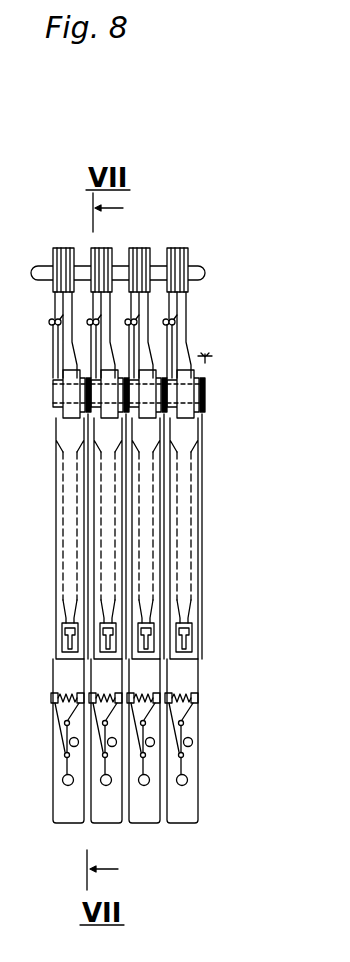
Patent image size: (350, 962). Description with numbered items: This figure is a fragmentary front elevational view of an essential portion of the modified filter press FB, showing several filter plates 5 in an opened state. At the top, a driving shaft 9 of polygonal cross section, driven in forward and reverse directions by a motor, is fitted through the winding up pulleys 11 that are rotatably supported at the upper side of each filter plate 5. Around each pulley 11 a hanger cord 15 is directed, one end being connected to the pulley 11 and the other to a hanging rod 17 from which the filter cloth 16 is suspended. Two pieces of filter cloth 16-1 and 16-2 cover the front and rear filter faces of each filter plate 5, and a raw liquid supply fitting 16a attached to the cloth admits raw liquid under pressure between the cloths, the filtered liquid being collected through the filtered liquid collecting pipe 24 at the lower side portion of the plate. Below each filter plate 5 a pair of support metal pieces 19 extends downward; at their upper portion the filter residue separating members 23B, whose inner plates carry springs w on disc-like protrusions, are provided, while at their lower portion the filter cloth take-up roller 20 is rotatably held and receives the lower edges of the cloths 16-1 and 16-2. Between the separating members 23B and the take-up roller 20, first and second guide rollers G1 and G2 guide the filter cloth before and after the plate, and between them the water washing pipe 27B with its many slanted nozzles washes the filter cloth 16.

The filter press FB is at (212, 159).
The driving shaft 9 is at (194, 262).
The winding up pulley 11 is at (171, 248).
The hanger cord 15 is at (181, 300).
The hanging rod 17 is at (178, 321).
The filter cloth 16-1 is at (122, 338).
The filter cloth 16-2 is at (129, 339).
The raw liquid supply fitting 16a is at (207, 397).
The filter plate 5 is at (183, 433).
The filter cloth 16 is at (202, 463).
The filtered liquid collecting pipe 24 is at (189, 633).
The spring w is at (180, 688).
The filter residue separating member 23B is at (202, 689).
The first guide roller G1 is at (180, 722).
The water washing pipe 27B is at (191, 743).
The second guide roller G2 is at (183, 757).
The filter cloth take-up roller 20 is at (187, 782).
The support metal piece 19 is at (182, 814).